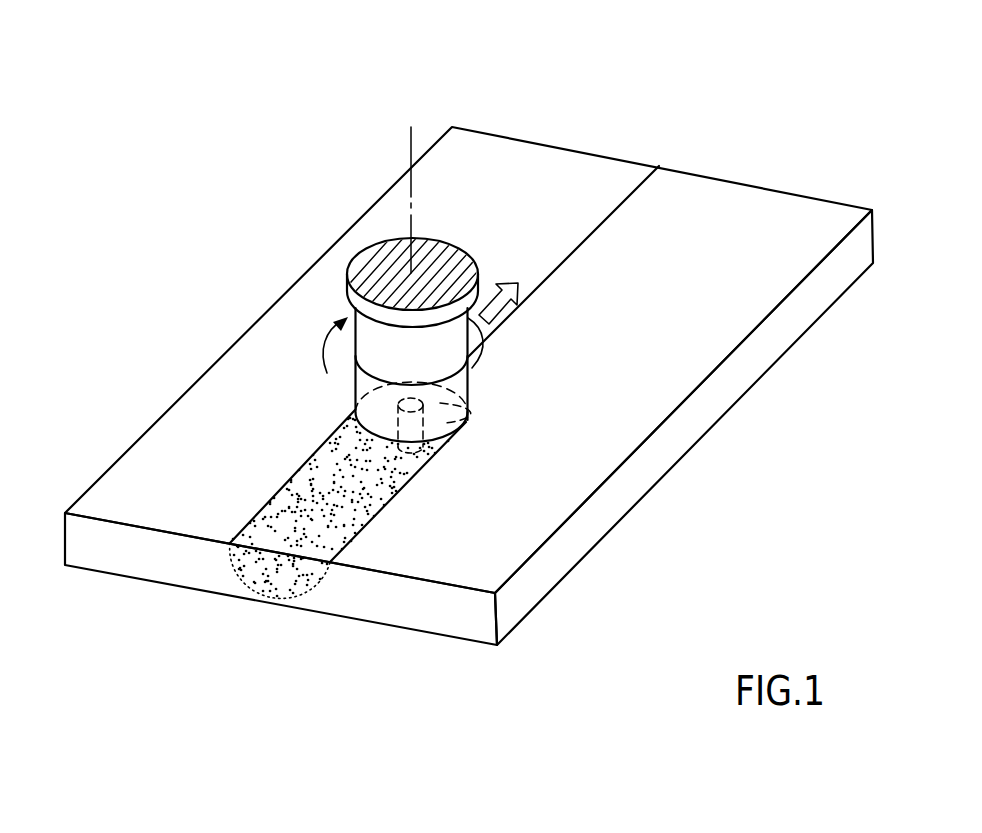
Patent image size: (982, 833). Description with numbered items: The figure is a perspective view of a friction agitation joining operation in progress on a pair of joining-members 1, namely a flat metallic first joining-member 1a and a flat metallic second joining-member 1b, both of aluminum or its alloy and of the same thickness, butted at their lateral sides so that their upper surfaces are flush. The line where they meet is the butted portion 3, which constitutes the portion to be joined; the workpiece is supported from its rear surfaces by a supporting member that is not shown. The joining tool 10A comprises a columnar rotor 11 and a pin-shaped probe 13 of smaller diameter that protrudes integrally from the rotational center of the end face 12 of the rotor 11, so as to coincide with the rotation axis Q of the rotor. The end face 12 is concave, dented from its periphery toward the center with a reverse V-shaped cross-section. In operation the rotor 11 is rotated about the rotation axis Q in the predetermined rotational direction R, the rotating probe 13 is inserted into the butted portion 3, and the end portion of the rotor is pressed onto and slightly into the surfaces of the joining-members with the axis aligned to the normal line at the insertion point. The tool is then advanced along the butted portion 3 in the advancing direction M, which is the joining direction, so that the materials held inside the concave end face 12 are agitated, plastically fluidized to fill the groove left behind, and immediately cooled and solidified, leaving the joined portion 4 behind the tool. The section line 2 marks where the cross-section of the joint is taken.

The joining-members 1 is at (607, 57).
The first joining-member 1a is at (648, 236).
The second joining-member 1b is at (531, 174).
The section line of FIG. 2 is at (669, 155).
The butted portion 3 is at (573, 253).
The joined portion 4 is at (313, 503).
The joining tool 10A is at (340, 273).
The rotor 11 is at (357, 390).
The end face 12 is at (478, 424).
The probe 13 is at (415, 452).
The advancing direction M is at (490, 298).
The rotational direction R is at (388, 346).
The rotation axis Q is at (410, 153).